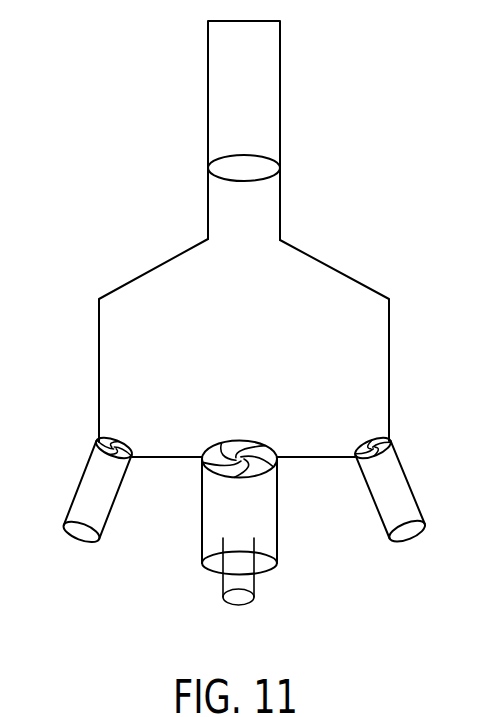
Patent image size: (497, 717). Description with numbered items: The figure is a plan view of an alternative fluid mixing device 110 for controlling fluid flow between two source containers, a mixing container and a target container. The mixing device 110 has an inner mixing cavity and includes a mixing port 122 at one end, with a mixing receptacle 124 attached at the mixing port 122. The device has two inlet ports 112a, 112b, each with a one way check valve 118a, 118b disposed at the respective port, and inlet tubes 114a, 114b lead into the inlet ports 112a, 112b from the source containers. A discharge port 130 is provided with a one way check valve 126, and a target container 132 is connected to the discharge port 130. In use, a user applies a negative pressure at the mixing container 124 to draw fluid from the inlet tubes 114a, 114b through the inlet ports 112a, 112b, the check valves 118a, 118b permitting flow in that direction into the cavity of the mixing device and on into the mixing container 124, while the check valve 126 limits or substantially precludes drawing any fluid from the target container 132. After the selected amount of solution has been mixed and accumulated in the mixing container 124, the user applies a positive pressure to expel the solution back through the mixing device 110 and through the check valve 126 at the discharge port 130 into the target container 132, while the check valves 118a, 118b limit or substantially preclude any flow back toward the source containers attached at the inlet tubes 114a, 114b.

The mixing device 110 is at (90, 262).
The mixing receptacle 124 is at (280, 64).
The mixing port 122 is at (265, 170).
The one way check valve 126 is at (240, 458).
The discharge port 130 is at (248, 441).
The target container 132 is at (278, 553).
The inlet tube 114a is at (93, 497).
The inlet port 112a is at (120, 464).
The one way check valve 118a is at (117, 446).
The inlet tube 114b is at (396, 496).
The inlet port 112b is at (372, 447).
The one way check valve 118b is at (388, 443).